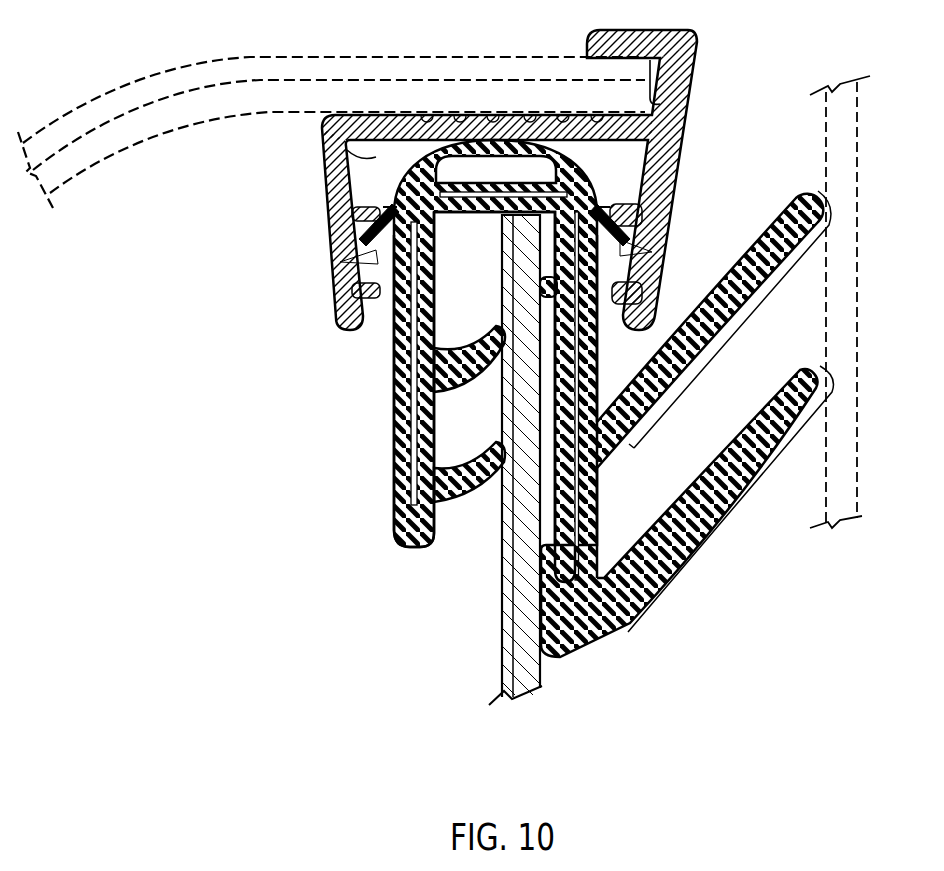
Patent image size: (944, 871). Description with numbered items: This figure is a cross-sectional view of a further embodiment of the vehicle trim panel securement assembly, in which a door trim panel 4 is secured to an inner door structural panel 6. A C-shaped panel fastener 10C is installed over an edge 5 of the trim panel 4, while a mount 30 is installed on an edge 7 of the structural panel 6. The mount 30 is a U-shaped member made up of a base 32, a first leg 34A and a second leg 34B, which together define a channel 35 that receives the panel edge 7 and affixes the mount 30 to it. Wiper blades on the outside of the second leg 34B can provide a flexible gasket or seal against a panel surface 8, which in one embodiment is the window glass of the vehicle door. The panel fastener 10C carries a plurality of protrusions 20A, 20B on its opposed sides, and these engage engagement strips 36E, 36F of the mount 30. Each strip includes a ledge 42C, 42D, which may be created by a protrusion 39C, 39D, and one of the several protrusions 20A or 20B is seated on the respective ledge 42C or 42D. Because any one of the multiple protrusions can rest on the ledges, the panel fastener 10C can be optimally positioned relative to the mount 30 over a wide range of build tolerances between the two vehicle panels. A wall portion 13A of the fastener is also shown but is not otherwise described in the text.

The door trim panel 4 is at (133, 78).
The edge of trim panel 5 is at (688, 107).
The inner door structural panel 6 is at (540, 657).
The edge of structural panel 7 is at (502, 610).
The panel surface 8 is at (863, 133).
The panel fastener 10C is at (702, 48).
The inner wall of channel 13A is at (343, 152).
The protrusions 20A is at (350, 283).
The protrusions 20B is at (623, 283).
The mount 30 is at (393, 466).
The base 32 is at (488, 213).
The first leg 34A is at (392, 384).
The second leg 34B is at (595, 490).
The channel 35 is at (458, 445).
The engagement strip 36E is at (389, 209).
The engagement strip 36F is at (602, 209).
The protrusion 39C is at (350, 198).
The protrusion 39D is at (660, 178).
The ledge 42C is at (414, 270).
The ledge 42D is at (600, 250).